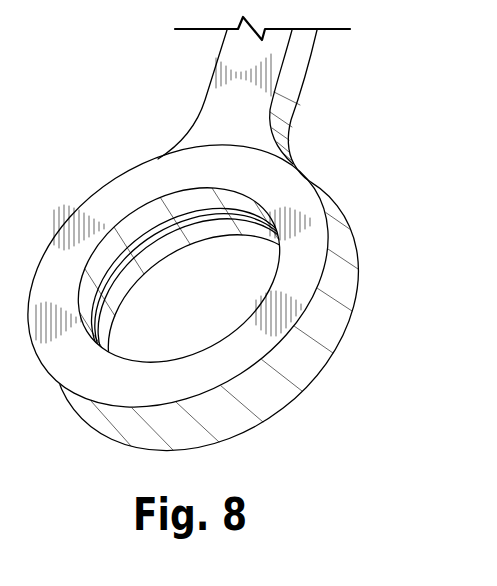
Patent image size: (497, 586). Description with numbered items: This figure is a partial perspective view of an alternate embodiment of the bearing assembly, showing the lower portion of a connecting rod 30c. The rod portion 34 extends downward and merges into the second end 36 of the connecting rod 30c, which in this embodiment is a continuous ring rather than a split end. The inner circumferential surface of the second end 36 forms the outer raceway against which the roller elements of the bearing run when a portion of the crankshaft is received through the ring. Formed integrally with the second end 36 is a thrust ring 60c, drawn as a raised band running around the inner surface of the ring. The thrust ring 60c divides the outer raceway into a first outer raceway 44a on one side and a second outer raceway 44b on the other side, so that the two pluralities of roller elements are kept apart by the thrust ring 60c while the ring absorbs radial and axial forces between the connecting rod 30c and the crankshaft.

The connecting rod 30c is at (147, 98).
The rod portion 34 is at (308, 68).
The second end 36 is at (337, 348).
The first outer raceway 44a is at (131, 233).
The second outer raceway 44b is at (215, 226).
The thrust ring 60c is at (155, 238).